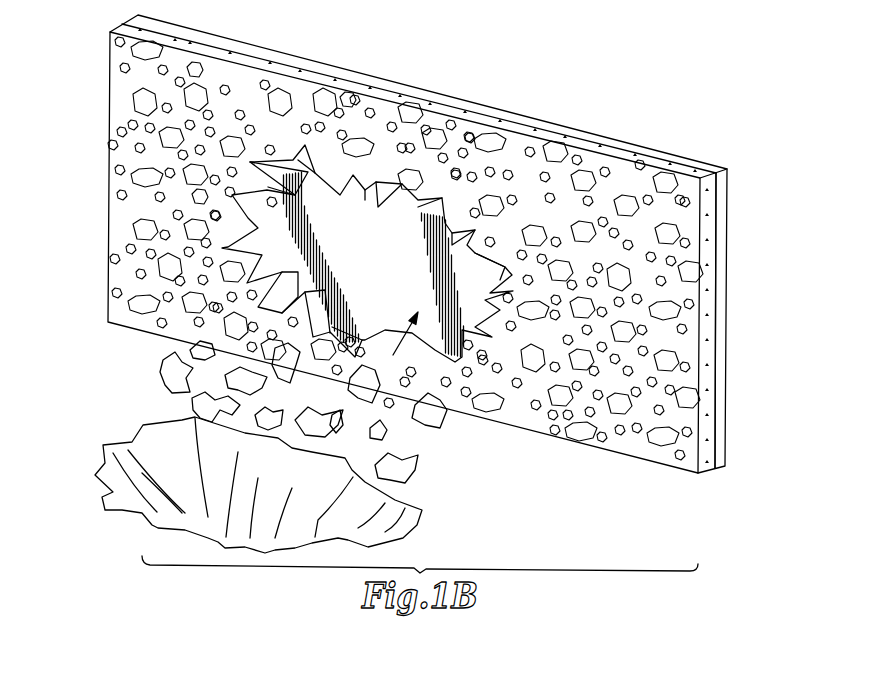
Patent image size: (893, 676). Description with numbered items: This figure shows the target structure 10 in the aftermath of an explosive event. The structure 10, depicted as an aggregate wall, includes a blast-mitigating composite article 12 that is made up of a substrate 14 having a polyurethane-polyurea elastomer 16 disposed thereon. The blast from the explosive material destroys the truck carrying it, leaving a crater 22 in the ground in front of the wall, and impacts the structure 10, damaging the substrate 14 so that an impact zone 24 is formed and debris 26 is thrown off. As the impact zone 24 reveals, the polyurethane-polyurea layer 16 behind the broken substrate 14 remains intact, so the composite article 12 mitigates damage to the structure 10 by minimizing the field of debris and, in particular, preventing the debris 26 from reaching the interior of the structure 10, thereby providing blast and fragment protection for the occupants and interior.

The structure 10 is at (100, 86).
The composite article 12 is at (98, 241).
The substrate 14 is at (703, 350).
The polyurethane-polyurea elastomer 16 is at (380, 268).
The crater 22 is at (130, 441).
The impact zone 24 is at (395, 355).
The debris 26 is at (160, 380).